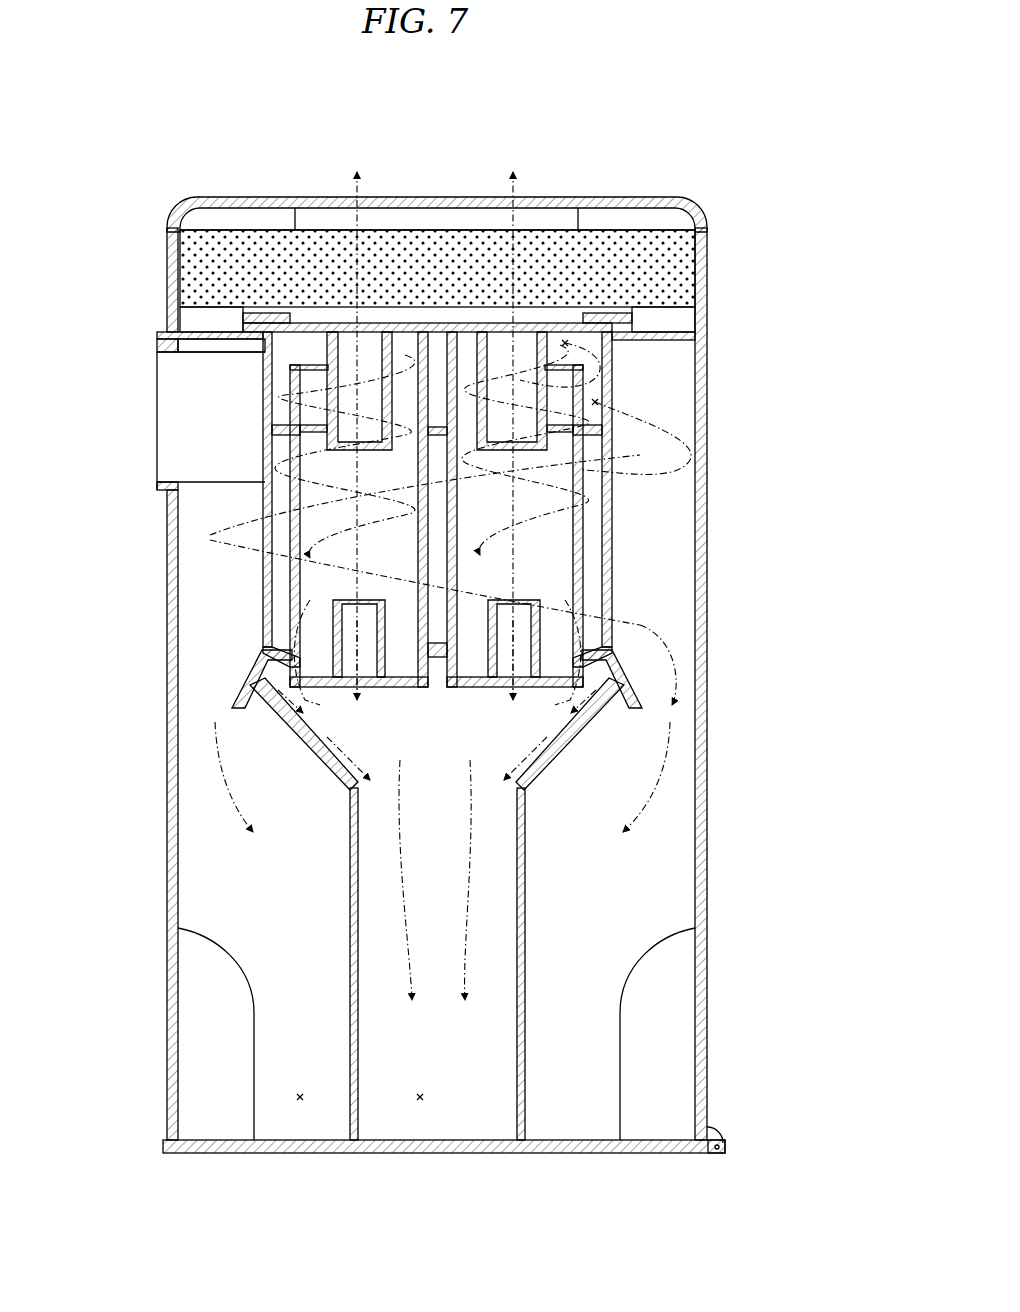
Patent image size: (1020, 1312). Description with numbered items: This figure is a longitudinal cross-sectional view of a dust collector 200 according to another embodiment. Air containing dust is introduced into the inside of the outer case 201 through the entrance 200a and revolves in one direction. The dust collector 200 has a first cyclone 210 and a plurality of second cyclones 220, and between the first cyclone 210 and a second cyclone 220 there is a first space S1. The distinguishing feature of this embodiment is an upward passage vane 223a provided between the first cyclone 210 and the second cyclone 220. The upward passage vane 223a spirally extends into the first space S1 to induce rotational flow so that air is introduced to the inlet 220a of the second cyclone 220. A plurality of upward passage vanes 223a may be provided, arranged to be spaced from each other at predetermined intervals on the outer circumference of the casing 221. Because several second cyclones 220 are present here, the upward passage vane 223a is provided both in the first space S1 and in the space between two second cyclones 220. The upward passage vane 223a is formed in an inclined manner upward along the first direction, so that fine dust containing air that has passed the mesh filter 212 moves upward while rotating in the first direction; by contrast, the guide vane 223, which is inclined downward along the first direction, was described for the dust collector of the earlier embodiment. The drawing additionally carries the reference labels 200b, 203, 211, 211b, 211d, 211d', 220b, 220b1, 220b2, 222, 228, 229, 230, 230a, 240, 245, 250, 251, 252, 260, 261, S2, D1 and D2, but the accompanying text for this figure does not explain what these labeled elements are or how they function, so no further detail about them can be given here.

The dust collector 200 is at (715, 155).
The entrance 200a is at (185, 447).
The outlet 200b is at (397, 206).
The outer case 201 is at (707, 478).
The dust storage space 203 is at (218, 1092).
The first cyclone 210 is at (68, 495).
The separator body 211 is at (268, 470).
The inner wall 211b is at (292, 541).
The dust discharge port 211d is at (227, 638).
The dust discharge port 211d' is at (305, 638).
The mesh filter 212 is at (430, 574).
The second cyclone 220 is at (78, 128).
The inlet 220a is at (263, 420).
The cyclone outlet 220b is at (805, 632).
The first outlet 220b1 is at (575, 650).
The second outlet 220b2 is at (575, 704).
The casing 221 is at (300, 420).
The cover plate 222 is at (383, 400).
The guide vane 223 is at (265, 432).
The upward passage vane 223a is at (168, 340).
The guide member 228 is at (540, 745).
The dust guide wall 229 is at (583, 600).
The filter frame 230 is at (570, 328).
The frame opening 230a is at (500, 326).
The upper cover 240 is at (607, 198).
The filter 245 is at (675, 266).
The dust discharge duct 250 is at (783, 775).
The inclined portion 251 is at (553, 760).
The vertical portion 252 is at (525, 900).
The base plate 260 is at (500, 1153).
The fastener 261 is at (725, 1145).
The first space S1 is at (595, 402).
The second space S2 is at (565, 343).
The first dust storage D1 is at (300, 1097).
The second dust storage D2 is at (420, 1097).